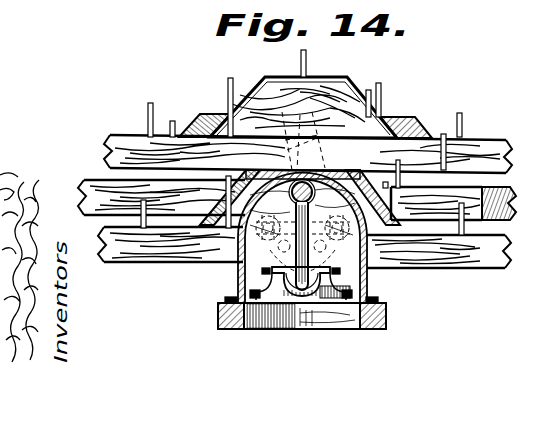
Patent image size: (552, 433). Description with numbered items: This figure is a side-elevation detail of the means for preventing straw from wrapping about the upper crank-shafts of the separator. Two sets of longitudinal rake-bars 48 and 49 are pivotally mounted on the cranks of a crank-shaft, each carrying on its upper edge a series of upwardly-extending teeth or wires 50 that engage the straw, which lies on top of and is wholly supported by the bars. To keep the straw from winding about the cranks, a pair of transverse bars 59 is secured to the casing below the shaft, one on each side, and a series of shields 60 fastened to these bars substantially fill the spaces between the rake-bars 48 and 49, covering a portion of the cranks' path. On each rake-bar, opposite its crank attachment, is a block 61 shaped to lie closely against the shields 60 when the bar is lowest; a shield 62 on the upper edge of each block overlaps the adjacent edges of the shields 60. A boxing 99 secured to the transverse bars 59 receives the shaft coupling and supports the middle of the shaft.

The rake-bar 48 is at (487, 148).
The rake-bar 49 is at (512, 198).
The teeth or wires 50 is at (443, 134).
The transverse bar 59 is at (218, 321).
The shield 60 is at (238, 275).
The block 61 is at (349, 80).
The shield 62 is at (228, 110).
The boxing 99 is at (283, 289).